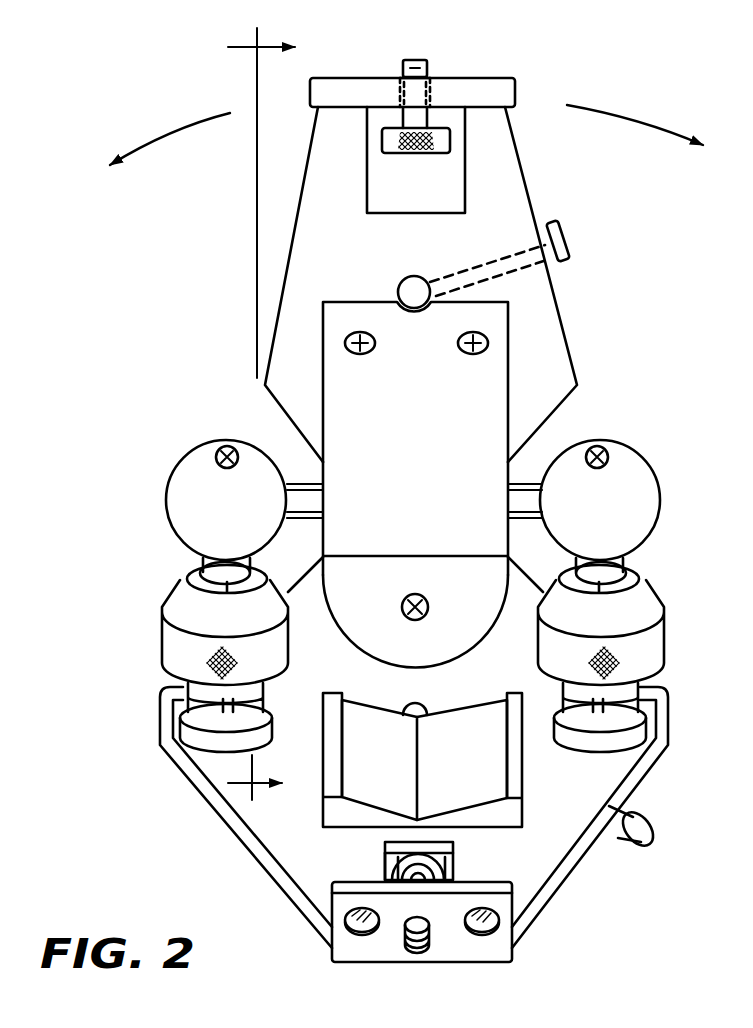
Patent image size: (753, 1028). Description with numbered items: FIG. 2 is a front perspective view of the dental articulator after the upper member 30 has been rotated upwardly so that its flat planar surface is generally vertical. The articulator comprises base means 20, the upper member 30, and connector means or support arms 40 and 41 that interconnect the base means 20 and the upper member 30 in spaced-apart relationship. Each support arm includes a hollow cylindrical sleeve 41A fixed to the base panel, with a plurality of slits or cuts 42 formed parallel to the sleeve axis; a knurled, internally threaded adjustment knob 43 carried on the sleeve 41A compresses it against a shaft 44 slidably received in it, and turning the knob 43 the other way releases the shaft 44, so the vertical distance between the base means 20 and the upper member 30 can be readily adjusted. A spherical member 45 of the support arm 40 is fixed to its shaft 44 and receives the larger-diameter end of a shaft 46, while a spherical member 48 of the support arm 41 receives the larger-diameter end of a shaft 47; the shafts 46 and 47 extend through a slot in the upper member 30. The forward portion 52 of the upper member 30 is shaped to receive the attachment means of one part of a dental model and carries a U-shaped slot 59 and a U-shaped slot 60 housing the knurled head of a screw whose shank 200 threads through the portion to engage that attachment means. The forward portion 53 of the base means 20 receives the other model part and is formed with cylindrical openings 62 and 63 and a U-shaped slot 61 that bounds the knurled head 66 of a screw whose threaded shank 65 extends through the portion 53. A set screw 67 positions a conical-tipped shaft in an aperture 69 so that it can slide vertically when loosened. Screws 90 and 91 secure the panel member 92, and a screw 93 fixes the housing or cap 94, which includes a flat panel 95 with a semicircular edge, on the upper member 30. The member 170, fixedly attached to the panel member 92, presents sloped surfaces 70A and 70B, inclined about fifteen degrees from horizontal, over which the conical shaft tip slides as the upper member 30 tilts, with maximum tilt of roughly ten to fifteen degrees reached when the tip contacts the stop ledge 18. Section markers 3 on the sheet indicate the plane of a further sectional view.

The section line 3- 3 is at (261, 416).
The stop ledge 18 is at (517, 770).
The base means 20 is at (205, 822).
The upper member 30 is at (577, 338).
The support arm 40 is at (160, 521).
The support arm 41 is at (663, 527).
The hollow cylindrical sleeve 41A is at (203, 705).
The slits 42 is at (202, 597).
The adjustment knob 43 is at (178, 650).
The shaft 44 is at (217, 567).
The spherical member 45 is at (212, 505).
The shaft 46 is at (298, 506).
The shaft 47 is at (527, 506).
The spherical member 48 is at (586, 505).
The forward portion 52 is at (518, 92).
The forward portion 53 is at (325, 958).
The U-shaped slot 59 is at (433, 88).
The U-shaped slot 60 is at (367, 200).
The U-shaped slot 61 is at (385, 866).
The cylindrical opening 62 is at (372, 935).
The cylindrical opening 63 is at (480, 935).
The shank 65 is at (418, 948).
The knurled head 66 is at (458, 863).
The set screw 67 is at (562, 227).
The aperture 69 is at (410, 277).
The sloped surface 70A is at (360, 737).
The sloped surface 70B is at (480, 733).
The screw 90 is at (375, 352).
The screw 91 is at (463, 354).
The panel member 92 is at (400, 440).
The screw 93 is at (401, 620).
The cap 94 is at (452, 587).
The flat panel 95 is at (454, 633).
The member 170 is at (313, 788).
The shank 200 is at (400, 66).